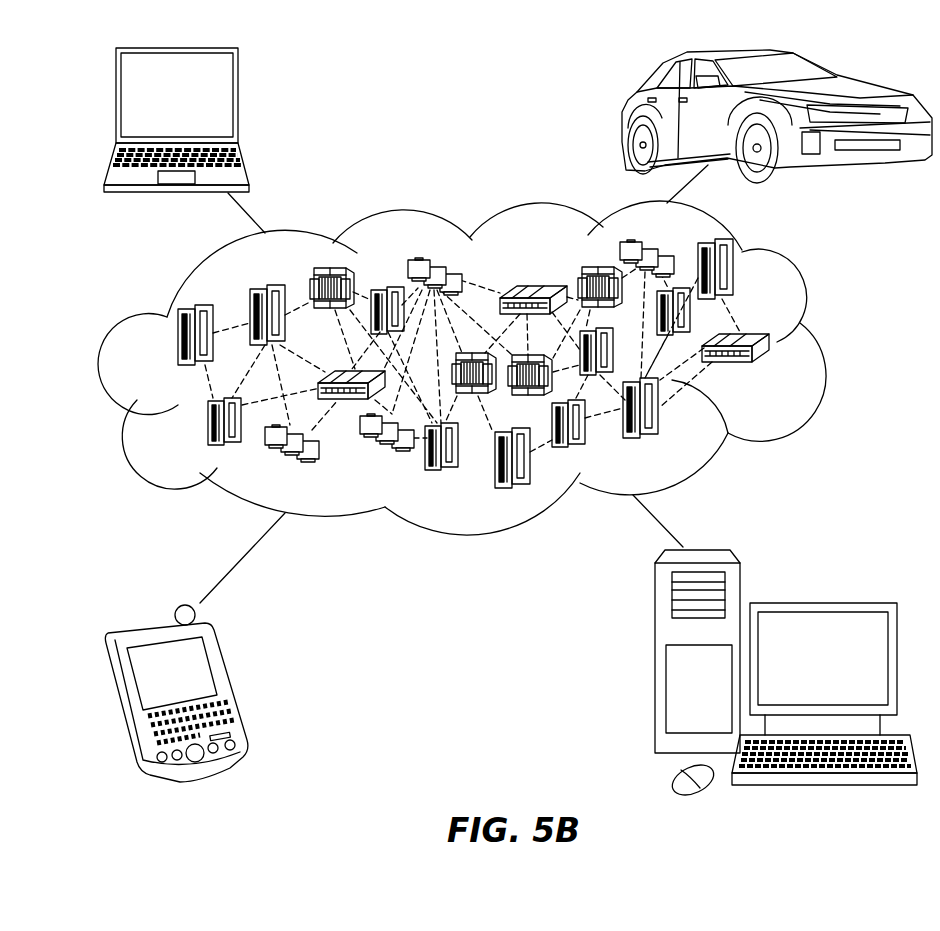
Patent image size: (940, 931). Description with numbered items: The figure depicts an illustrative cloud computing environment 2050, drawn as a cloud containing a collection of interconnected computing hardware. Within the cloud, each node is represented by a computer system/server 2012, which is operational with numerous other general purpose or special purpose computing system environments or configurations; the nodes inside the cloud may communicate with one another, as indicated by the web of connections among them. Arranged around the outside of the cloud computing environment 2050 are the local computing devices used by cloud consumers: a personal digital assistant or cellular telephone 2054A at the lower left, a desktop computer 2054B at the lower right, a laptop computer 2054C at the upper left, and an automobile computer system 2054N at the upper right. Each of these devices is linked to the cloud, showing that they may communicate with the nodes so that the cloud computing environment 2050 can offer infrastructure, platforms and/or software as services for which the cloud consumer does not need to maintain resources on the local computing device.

The cloud computing environment 2050 is at (822, 343).
The computer system/server 2012 is at (772, 373).
The personal digital assistant (PDA) or cellular telephone 2054A is at (230, 683).
The desktop computer 2054B is at (822, 600).
The laptop computer 2054C is at (238, 102).
The automobile computer system 2054N is at (626, 115).